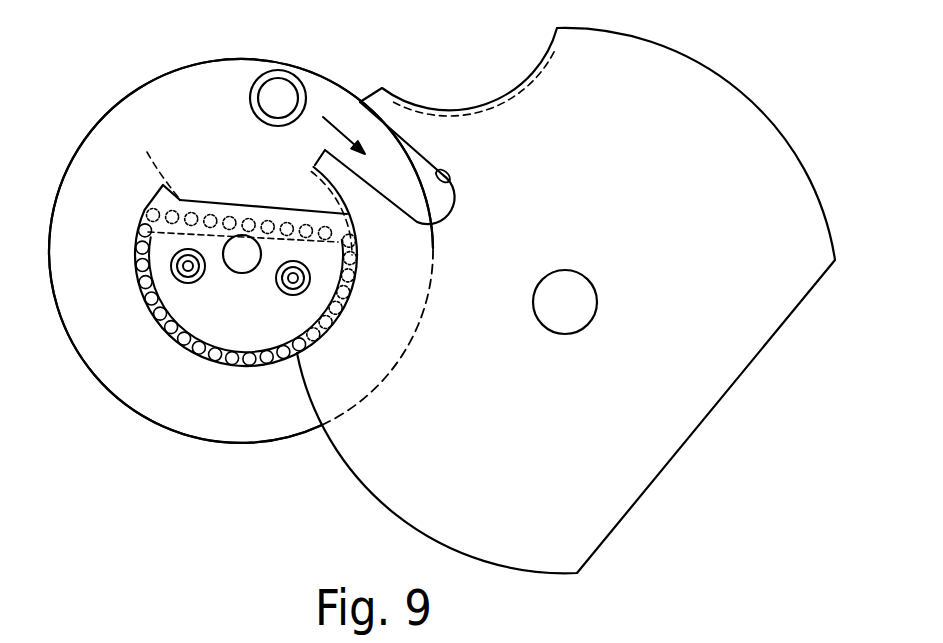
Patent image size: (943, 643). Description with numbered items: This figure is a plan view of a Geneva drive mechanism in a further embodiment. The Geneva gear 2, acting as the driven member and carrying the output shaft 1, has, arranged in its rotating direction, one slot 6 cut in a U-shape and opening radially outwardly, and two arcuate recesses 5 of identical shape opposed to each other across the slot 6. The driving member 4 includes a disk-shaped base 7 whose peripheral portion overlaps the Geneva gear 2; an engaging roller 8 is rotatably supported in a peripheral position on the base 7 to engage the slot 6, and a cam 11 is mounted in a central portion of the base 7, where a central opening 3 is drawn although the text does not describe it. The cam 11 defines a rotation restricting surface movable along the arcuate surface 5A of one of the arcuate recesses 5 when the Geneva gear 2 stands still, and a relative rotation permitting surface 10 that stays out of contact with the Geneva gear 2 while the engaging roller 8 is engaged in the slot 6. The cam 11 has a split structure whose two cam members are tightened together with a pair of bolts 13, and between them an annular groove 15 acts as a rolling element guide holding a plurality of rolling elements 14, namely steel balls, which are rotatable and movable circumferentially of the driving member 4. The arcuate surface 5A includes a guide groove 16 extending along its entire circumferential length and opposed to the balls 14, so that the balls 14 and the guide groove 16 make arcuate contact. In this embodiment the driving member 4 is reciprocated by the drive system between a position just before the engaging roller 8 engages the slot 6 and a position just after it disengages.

The output shaft 1 is at (597, 300).
The Geneva gear 2 is at (818, 193).
The shaft hole of disc 3 is at (240, 257).
The driving member 4 is at (78, 147).
The arcuate recess 5 is at (497, 100).
The arcuate surface 5A is at (325, 181).
The slot 6 is at (451, 178).
The base 7 is at (177, 410).
The engaging roller 8 is at (254, 83).
The relative rotation permitting surface 10 is at (205, 198).
The cam 11 is at (145, 209).
The bolts 13 is at (188, 272).
The rolling elements 14 is at (140, 285).
The annular groove 15 is at (145, 164).
The guide groove 16 is at (345, 227).